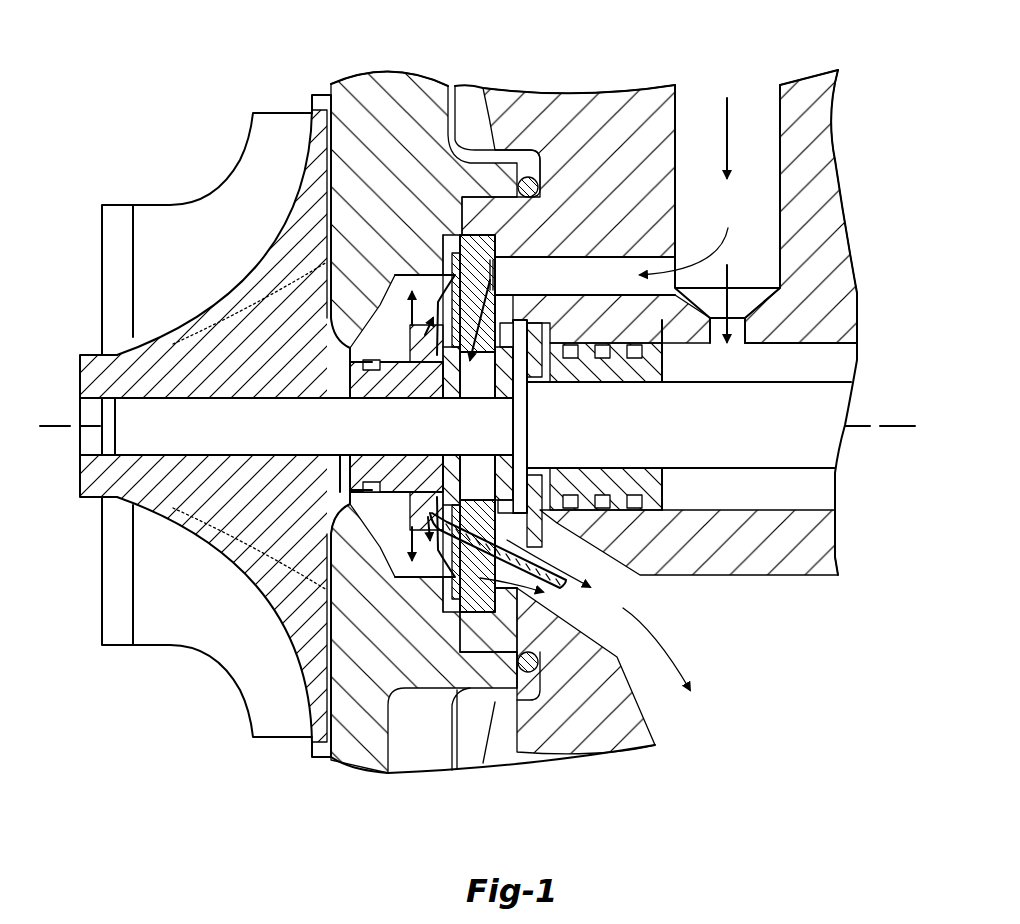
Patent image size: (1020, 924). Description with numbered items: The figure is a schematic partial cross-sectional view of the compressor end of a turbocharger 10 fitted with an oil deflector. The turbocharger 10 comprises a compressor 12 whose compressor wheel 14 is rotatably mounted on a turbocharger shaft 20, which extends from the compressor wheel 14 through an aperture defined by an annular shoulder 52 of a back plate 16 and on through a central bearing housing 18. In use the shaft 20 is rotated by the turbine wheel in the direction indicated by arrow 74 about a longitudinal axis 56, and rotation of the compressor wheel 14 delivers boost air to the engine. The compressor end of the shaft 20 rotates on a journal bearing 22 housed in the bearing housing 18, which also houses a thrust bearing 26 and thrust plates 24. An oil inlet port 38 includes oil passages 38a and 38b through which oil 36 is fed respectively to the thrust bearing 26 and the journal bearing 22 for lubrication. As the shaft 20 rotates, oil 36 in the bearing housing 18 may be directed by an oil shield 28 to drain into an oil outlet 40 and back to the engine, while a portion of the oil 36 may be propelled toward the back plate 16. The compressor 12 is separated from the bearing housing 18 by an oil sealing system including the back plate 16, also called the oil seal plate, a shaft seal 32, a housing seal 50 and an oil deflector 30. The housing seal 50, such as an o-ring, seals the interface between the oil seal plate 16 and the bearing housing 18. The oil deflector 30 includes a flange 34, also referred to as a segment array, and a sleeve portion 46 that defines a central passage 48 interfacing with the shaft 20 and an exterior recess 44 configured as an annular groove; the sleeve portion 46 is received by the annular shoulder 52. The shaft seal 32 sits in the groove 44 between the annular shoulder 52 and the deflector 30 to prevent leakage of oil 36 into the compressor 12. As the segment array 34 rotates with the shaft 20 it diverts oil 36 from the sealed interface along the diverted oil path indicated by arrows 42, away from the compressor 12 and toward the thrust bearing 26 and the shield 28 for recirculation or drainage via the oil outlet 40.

The turbocharger 10 is at (855, 105).
The compressor 12 is at (132, 135).
The compressor wheel 14 is at (242, 157).
The back plate 16 is at (378, 70).
The bearing housing 18 is at (590, 95).
The turbocharger shaft 20 is at (808, 470).
The journal bearing 22 is at (665, 490).
The thrust plates 24 is at (463, 465).
The thrust bearing 26 is at (502, 245).
The oil shield 28 is at (551, 590).
The oil deflector 30 is at (335, 375).
The shaft seal 32 is at (350, 500).
The flange 34 is at (407, 515).
The oil 36 is at (725, 125).
The oil inlet port 38 is at (740, 210).
The oil passage 38a is at (615, 285).
The oil passage 38b is at (746, 376).
The oil outlet 40 is at (614, 614).
The arrows (diverted oil path) 42 is at (397, 323).
The recess 44 is at (378, 473).
The sleeve portion 46 is at (347, 470).
The central passage 48 is at (395, 402).
The housing seal 50 is at (527, 698).
The annular shoulder 52 is at (375, 345).
The longitudinal axis 56 is at (884, 420).
The arrow (direction of rotation) 74 is at (44, 440).